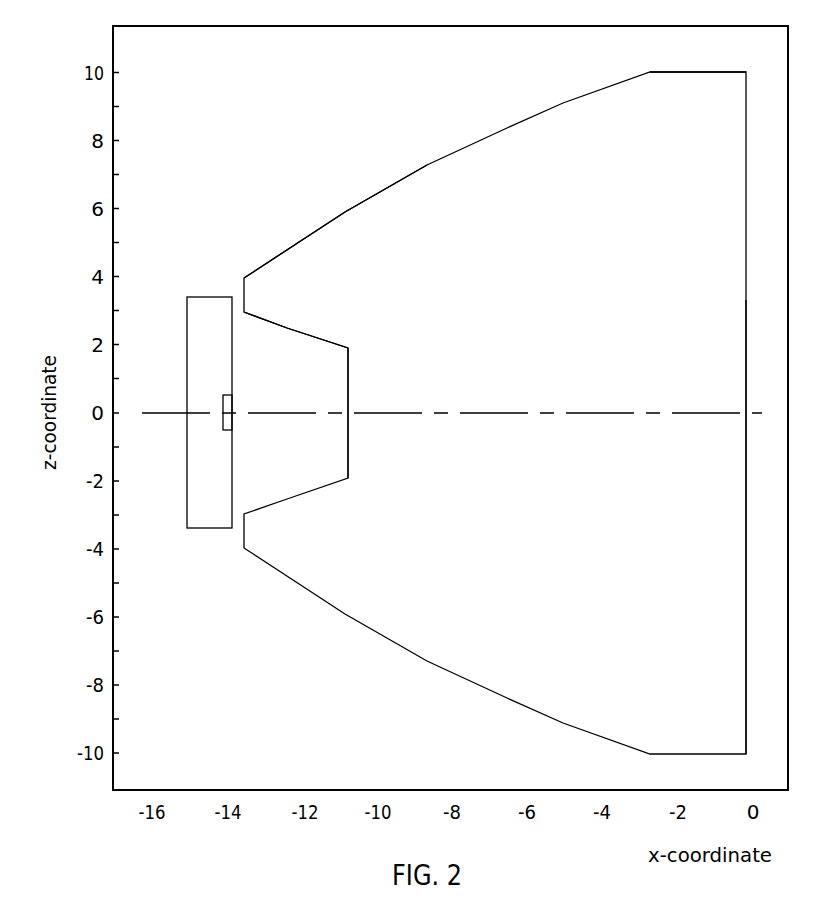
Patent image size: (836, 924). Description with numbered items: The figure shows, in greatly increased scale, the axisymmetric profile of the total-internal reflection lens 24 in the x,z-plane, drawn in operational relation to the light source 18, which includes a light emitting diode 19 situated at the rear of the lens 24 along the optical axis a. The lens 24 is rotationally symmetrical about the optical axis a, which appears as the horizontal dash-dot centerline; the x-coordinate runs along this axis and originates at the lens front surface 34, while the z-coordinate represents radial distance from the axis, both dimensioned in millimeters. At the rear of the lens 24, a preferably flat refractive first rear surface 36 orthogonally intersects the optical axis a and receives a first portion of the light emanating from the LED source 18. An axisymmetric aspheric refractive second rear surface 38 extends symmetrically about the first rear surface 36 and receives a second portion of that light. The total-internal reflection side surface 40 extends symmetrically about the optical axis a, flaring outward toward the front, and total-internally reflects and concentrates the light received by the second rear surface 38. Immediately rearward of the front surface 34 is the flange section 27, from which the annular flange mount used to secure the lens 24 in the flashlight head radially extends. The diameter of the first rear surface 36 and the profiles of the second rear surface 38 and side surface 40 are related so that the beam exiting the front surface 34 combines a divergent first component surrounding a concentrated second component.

The light source 18 is at (219, 531).
The light emitting diode 19 is at (232, 398).
The total-internal reflection lens 24 is at (424, 142).
The flange section 27 is at (687, 72).
The front surface 34 is at (748, 550).
The first rear surface 36 is at (348, 370).
The second rear surface 38 is at (288, 326).
The TIR side surface 40 is at (345, 213).
The optical axis a is at (505, 413).